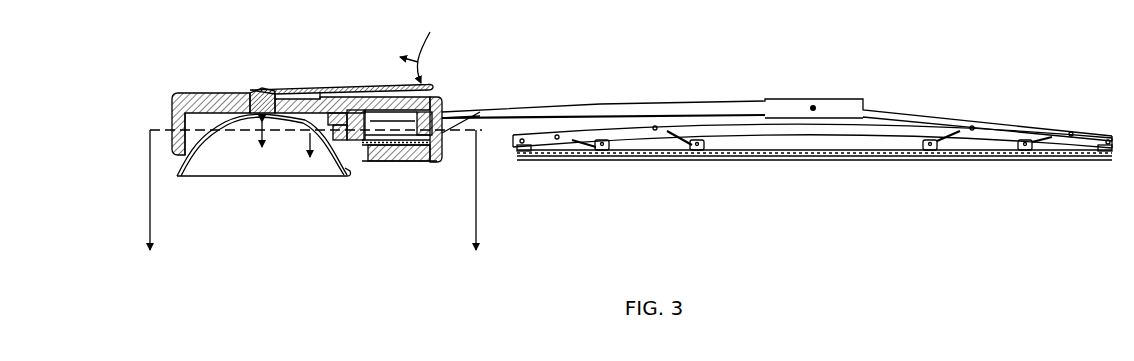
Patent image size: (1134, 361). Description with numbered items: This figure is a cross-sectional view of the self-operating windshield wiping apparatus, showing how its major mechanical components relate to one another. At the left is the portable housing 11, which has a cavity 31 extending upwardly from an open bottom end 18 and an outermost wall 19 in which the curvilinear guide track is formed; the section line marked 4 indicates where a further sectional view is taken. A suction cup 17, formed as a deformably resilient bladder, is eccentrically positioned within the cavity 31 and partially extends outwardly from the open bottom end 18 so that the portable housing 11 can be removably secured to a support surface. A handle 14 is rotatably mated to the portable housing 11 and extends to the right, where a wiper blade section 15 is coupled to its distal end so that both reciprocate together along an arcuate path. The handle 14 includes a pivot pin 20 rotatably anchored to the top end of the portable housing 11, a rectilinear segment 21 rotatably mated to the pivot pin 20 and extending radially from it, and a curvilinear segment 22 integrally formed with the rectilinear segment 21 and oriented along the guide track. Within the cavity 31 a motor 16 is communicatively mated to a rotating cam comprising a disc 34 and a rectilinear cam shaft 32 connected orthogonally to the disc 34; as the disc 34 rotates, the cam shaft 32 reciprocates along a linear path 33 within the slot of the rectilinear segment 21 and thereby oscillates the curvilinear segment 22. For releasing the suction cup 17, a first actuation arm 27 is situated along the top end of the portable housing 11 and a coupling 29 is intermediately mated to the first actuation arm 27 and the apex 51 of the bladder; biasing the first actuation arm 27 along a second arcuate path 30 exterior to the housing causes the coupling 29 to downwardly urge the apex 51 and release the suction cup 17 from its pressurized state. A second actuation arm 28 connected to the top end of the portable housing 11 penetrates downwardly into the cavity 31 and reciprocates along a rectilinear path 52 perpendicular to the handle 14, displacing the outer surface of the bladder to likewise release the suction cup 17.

The section line 4- 4 is at (313, 210).
The portable housing 11 is at (177, 123).
The handle 14 is at (583, 117).
The wiper blade section 15 is at (947, 125).
The motor 16 is at (417, 162).
The suction cup 17 is at (357, 169).
The open bottom end 18 is at (365, 150).
The outermost wall 19 is at (440, 143).
The pivot pin 20 is at (340, 124).
The rectilinear segment 21 is at (356, 123).
The curvilinear segment 22 is at (454, 113).
The first actuation arm 27 is at (297, 93).
The second actuation arm 28 is at (318, 116).
The coupling 29 is at (256, 90).
The second arcuate path 30 is at (423, 44).
The cavity 31 is at (197, 135).
The cam shaft 32 is at (378, 162).
The linear path 33 is at (445, 100).
The disc 34 is at (476, 112).
The apex 51 is at (248, 118).
The rectilinear path 52 is at (300, 150).